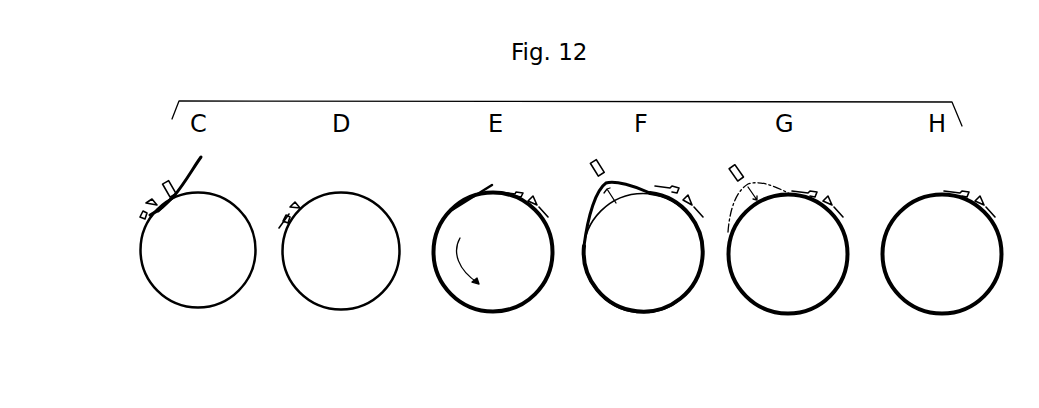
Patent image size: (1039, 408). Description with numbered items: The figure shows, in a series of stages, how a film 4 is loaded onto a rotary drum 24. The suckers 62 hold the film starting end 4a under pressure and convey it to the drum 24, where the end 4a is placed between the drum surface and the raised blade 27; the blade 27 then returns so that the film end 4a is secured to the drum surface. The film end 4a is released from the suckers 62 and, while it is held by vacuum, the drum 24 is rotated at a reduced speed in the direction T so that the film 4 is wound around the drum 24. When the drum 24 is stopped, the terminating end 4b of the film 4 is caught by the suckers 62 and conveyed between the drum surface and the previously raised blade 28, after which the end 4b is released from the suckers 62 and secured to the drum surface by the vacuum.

The rotary drum 24 is at (142, 283).
The blade 27 is at (148, 205).
The suckers 62 is at (165, 180).
The film 4 is at (203, 161).
The film starting end 4a is at (172, 206).
The terminating end of the film 4b is at (650, 190).
The blade 28 is at (668, 188).
The rotation direction T is at (462, 258).